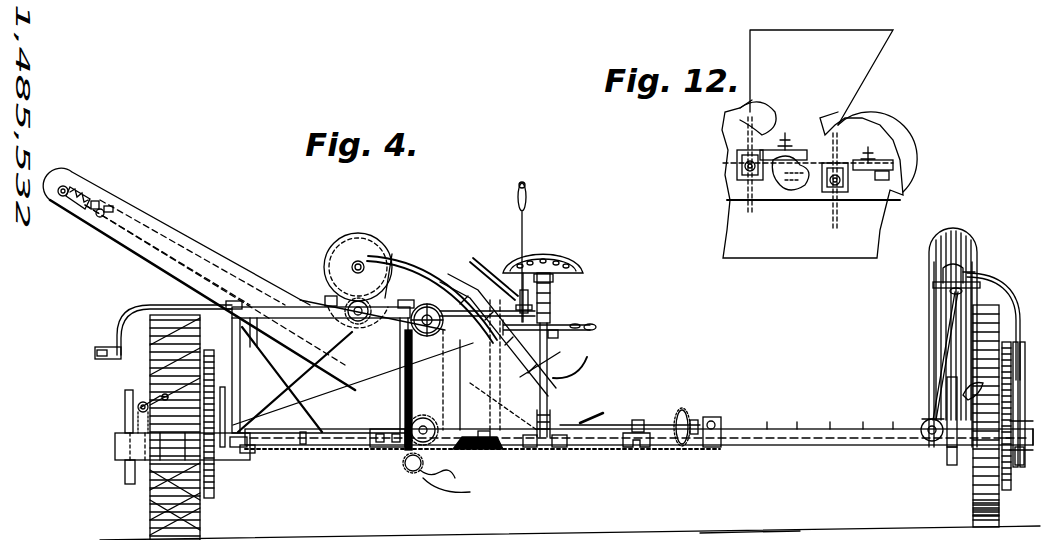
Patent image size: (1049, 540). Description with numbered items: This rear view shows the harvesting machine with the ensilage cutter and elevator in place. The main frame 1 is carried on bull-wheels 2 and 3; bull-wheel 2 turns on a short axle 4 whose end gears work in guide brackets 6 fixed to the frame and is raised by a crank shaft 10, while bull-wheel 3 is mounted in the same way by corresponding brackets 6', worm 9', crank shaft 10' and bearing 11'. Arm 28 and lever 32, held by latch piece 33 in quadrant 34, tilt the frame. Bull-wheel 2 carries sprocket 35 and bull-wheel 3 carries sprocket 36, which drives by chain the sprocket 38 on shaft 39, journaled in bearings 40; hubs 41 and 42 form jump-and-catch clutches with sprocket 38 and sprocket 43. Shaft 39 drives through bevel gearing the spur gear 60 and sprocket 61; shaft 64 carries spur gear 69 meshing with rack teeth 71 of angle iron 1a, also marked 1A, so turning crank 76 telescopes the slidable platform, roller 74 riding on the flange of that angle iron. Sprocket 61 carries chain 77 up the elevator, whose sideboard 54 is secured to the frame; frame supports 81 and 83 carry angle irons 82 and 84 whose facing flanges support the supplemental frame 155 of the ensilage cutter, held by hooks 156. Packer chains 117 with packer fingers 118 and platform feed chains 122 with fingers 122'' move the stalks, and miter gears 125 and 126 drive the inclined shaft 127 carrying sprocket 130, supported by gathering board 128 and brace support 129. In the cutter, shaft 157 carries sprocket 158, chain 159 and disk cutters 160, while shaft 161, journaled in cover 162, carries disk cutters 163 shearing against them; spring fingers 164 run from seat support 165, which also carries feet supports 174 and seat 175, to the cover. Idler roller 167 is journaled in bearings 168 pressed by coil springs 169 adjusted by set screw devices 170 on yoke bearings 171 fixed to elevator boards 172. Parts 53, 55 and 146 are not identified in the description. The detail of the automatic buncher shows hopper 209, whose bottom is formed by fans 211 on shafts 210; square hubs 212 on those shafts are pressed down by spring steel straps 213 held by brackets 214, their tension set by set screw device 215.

In FIG. 4, the main frame 1 is at (118, 446).
In FIG. 4, the angle iron 1a is at (665, 444).
In FIG. 4, the angle iron 1A is at (1027, 432).
In FIG. 4, the bull-wheel 2 is at (999, 498).
In FIG. 4, the bull-wheel 3 is at (150, 488).
In FIG. 4, the short axle 4 is at (1018, 375).
In FIG. 4, the guide brackets 6 is at (972, 404).
In FIG. 4, the guide brackets 6' is at (175, 444).
In FIG. 4, the worm 9' is at (127, 391).
In FIG. 4, the crank shaft 10 is at (941, 397).
In FIG. 4, the crank shaft 10' is at (115, 407).
In FIG. 4, the bearing 11' is at (115, 414).
In FIG. 4, the forwardly projecting arm 28 is at (455, 292).
In FIG. 4, the lever 32 is at (526, 196).
In FIG. 4, the latch piece 33 is at (556, 289).
In FIG. 4, the latch segment or quadrant 34 is at (550, 300).
In FIG. 4, the large sprocket 35 is at (1010, 484).
In FIG. 4, the large sprocket 36 is at (215, 482).
In FIG. 4, the sprocket 38 is at (132, 455).
In FIG. 4, the shaft 39 is at (303, 444).
In FIG. 4, the bearings 40 is at (252, 455).
In FIG. 4, the hub 41 is at (195, 445).
In FIG. 4, the hub 42 is at (642, 420).
In FIG. 4, the sprocket 43 is at (684, 412).
In FIG. 4, the hook 53 is at (571, 375).
In FIG. 4, the elevator sideboard 54 is at (567, 402).
In FIG. 4, the brace 55 is at (318, 380).
In FIG. 4, the spur gear 60 is at (570, 531).
In FIG. 4, the sprocket 61 is at (765, 534).
In FIG. 4, the shaft 64 is at (425, 474).
In FIG. 4, the spur gear 69 is at (411, 465).
In FIG. 4, the rack teeth 71 is at (475, 450).
In FIG. 4, the roller 74 is at (712, 442).
In FIG. 4, the crank 76 is at (495, 495).
In FIG. 4, the endless sprocket chain 77 is at (404, 466).
In FIG. 4, the frame support 81 is at (400, 348).
In FIG. 4, the angle iron 82 is at (412, 328).
In FIG. 4, the support 83 is at (242, 396).
In FIG. 4, the angle iron 84 is at (250, 336).
In FIG. 4, the packer sprocket chains 117 is at (560, 352).
In FIG. 4, the packer fingers 118 is at (492, 300).
In FIG. 4, the platform finger feed chains 122 is at (830, 404).
In FIG. 4, the fingers 122'' is at (840, 398).
In FIG. 4, the miter gear 125 is at (921, 423).
In FIG. 4, the miter gear 126 is at (953, 416).
In FIG. 4, the inclined shaft 127 is at (950, 290).
In FIG. 4, the gathering board 128 is at (966, 252).
In FIG. 4, the brace support 129 is at (1019, 312).
In FIG. 4, the sprocket 130 is at (976, 289).
In FIG. 4, the plate 146 is at (520, 300).
In FIG. 4, the supplemental frame 155 is at (288, 307).
In FIG. 4, the hooks 156 is at (233, 301).
In FIG. 4, the shaft 157 is at (328, 298).
In FIG. 4, the sprocket 158 is at (388, 290).
In FIG. 4, the sprocket chain 159 is at (395, 256).
In FIG. 4, the disk cutters 160 is at (348, 311).
In FIG. 4, the shaft 161 is at (358, 261).
In FIG. 4, the ensilage cutter cover 162 is at (365, 240).
In FIG. 4, the disk cutters 163 is at (348, 262).
In FIG. 4, the spring fingers 164 is at (472, 262).
In FIG. 4, the seat support 165 is at (593, 325).
In FIG. 4, the idler roller 167 is at (60, 186).
In FIG. 4, the bearings 168 is at (80, 188).
In FIG. 4, the coil springs 169 is at (96, 201).
In FIG. 4, the set screw devices 170 is at (113, 210).
In FIG. 4, the yoke bearings 171 is at (104, 209).
In FIG. 4, the elevator boards 172 is at (163, 256).
In FIG. 4, the feet supports 174 is at (560, 334).
In FIG. 4, the seat 175 is at (548, 262).
In FIG. 12, the hopper 209 is at (850, 35).
In FIG. 12, the shafts 210 is at (737, 165).
In FIG. 12, the fans 211 is at (790, 187).
In FIG. 12, the square hubs 212 is at (742, 178).
In FIG. 12, the straps of spring steel 213 is at (760, 152).
In FIG. 12, the brackets 214 is at (889, 176).
In FIG. 12, the set screw device 215 is at (788, 133).